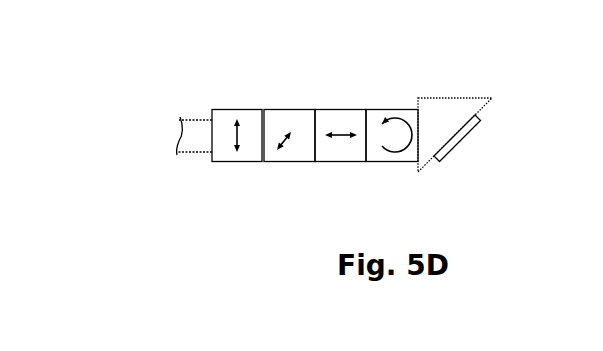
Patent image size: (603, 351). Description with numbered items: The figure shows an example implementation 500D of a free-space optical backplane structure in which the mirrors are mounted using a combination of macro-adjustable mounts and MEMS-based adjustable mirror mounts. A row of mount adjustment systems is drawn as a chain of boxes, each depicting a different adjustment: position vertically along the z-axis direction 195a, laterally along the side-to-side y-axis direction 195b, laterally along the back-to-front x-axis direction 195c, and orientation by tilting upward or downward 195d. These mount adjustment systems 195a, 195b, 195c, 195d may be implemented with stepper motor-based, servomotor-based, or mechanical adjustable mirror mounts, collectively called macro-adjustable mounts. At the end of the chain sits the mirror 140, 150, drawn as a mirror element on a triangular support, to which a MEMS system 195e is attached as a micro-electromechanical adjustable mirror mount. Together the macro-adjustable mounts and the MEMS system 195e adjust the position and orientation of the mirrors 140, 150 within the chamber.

The example implementation 500D is at (212, 247).
The z-axis direction adjustment 195a is at (228, 81).
The y-axis direction adjustment 195b is at (281, 81).
The x-axis direction adjustment 195c is at (340, 81).
The tilt adjustment 195d is at (409, 82).
The MEMS system 195e is at (482, 134).
The mirror 140 is at (497, 84).
The mirror 150 is at (495, 121).